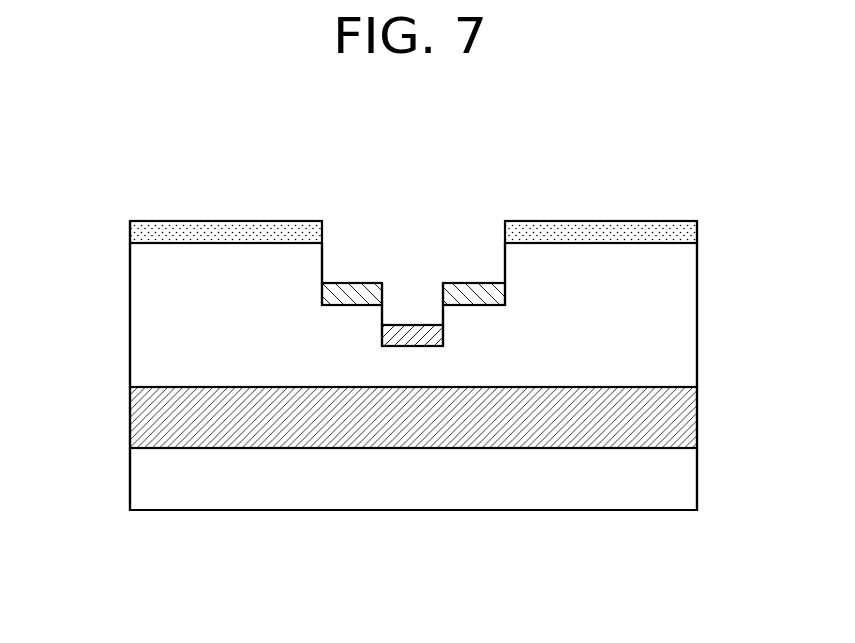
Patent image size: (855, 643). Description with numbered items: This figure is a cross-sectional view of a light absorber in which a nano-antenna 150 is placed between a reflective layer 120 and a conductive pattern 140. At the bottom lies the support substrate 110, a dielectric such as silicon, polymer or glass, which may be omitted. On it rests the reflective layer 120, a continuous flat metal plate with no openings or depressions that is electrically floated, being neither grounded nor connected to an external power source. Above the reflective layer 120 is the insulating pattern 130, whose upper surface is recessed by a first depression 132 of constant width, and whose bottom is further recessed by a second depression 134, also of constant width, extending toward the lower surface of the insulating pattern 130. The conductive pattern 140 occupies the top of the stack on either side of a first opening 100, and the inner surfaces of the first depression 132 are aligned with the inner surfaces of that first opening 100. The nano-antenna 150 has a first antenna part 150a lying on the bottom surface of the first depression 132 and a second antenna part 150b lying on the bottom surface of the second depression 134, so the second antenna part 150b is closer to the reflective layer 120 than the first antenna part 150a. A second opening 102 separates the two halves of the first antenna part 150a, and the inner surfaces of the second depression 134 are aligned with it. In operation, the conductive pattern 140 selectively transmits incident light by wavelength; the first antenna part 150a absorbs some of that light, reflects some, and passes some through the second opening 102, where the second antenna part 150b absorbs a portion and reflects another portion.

The first opening 100 is at (323, 228).
The second opening 102 is at (383, 288).
The support substrate 110 is at (686, 478).
The reflective layer 120 is at (686, 416).
The insulating pattern 130 is at (686, 316).
The first depression 132 is at (503, 263).
The second depression 134 is at (443, 313).
The conductive pattern 140 is at (140, 231).
The nano-antenna 150 is at (413, 453).
The first antenna part 150a is at (353, 297).
The second antenna part 150b is at (415, 340).